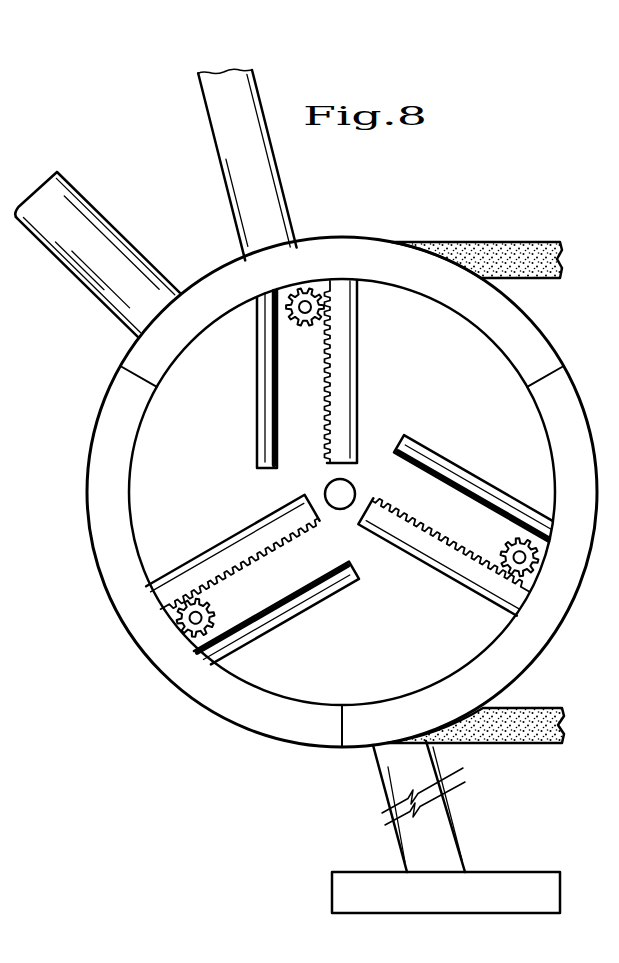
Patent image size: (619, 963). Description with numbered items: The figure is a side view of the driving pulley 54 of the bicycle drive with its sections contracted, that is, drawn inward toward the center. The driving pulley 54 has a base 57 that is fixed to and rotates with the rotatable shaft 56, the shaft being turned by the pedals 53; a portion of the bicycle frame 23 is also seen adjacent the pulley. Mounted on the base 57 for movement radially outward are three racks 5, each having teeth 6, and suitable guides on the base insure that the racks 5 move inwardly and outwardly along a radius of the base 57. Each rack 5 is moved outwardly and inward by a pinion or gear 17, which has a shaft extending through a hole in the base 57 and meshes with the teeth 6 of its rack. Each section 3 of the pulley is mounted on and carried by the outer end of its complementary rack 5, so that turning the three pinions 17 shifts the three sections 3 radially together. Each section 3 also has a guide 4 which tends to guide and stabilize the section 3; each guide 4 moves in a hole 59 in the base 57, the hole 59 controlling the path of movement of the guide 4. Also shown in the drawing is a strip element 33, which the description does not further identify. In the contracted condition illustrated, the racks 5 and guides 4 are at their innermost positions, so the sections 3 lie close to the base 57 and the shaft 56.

The section 3 is at (571, 403).
The guide 4 is at (257, 395).
The rack 5 is at (343, 403).
The teeth 6 is at (325, 388).
The pinion 17 is at (297, 327).
The frame 23 is at (103, 228).
The support strip 33 is at (484, 244).
The pedals 53 is at (205, 100).
The driving pulley 54 is at (120, 397).
The rotatable shaft 56 is at (355, 484).
The base 57 is at (150, 455).
The hole 59 is at (262, 343).